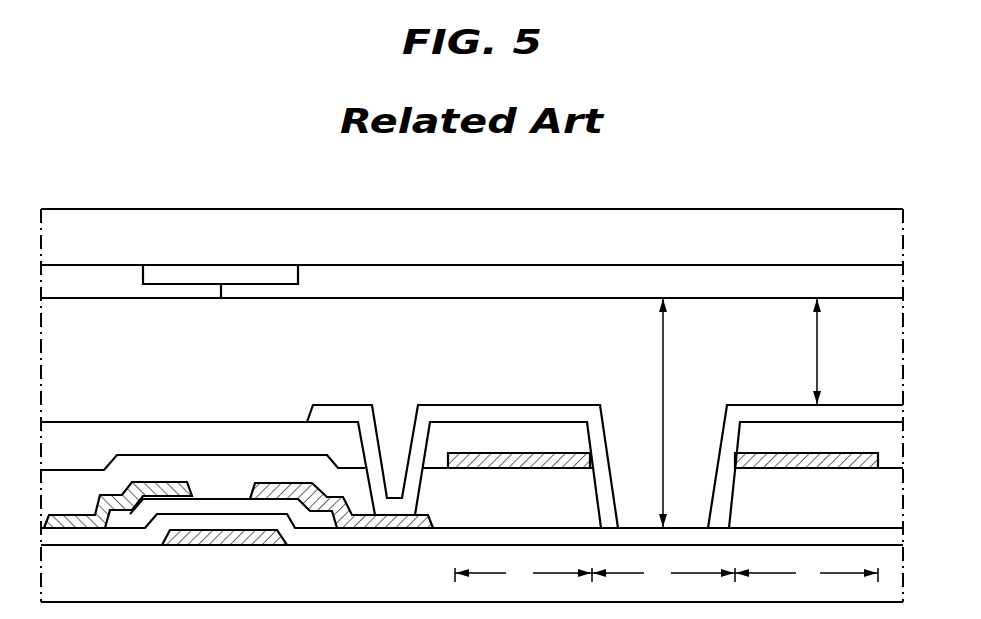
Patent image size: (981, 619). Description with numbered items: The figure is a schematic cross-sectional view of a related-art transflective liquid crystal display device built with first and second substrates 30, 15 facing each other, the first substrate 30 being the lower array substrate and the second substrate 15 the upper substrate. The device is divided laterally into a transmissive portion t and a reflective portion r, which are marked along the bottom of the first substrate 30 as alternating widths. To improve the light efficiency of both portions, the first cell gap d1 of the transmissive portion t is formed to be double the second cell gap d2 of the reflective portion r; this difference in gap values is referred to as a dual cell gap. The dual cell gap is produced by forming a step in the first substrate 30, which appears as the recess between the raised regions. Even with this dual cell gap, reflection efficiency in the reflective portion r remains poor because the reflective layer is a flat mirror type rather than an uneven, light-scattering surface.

The second substrate 15 is at (517, 255).
The first substrate 30 is at (361, 588).
The first cell gap d1 is at (660, 413).
The second cell gap d2 is at (816, 351).
The reflective portion r is at (666, 573).
The transmissive portion t is at (663, 573).